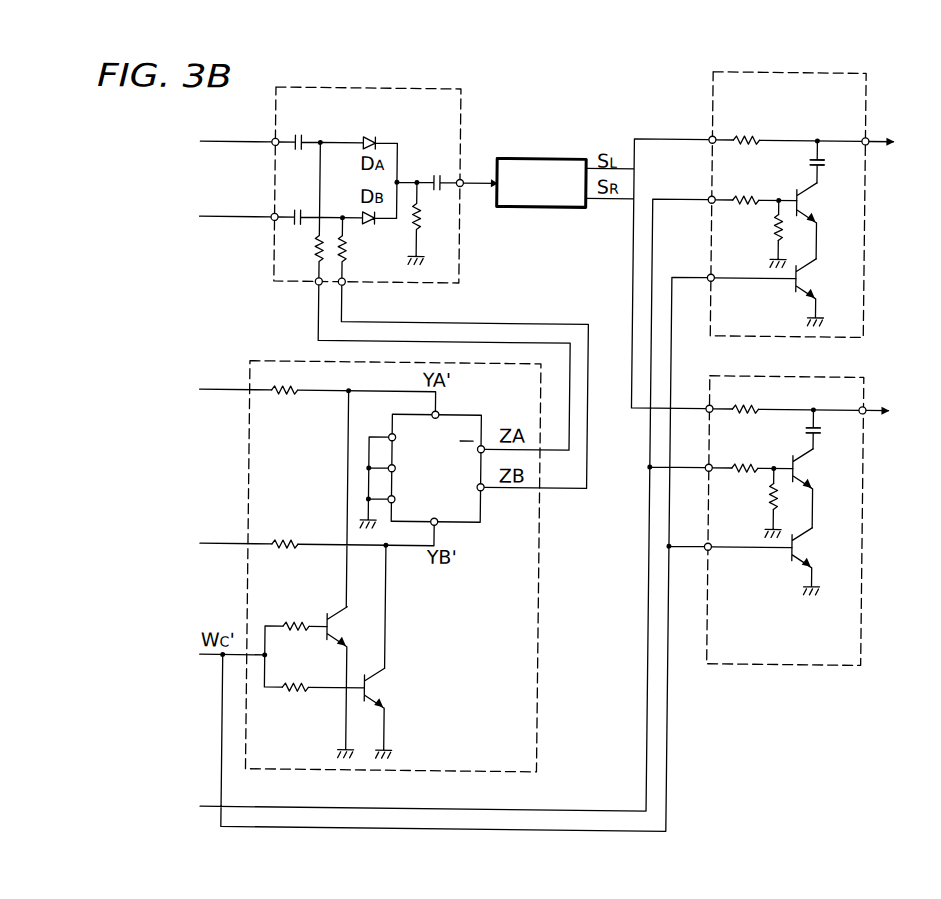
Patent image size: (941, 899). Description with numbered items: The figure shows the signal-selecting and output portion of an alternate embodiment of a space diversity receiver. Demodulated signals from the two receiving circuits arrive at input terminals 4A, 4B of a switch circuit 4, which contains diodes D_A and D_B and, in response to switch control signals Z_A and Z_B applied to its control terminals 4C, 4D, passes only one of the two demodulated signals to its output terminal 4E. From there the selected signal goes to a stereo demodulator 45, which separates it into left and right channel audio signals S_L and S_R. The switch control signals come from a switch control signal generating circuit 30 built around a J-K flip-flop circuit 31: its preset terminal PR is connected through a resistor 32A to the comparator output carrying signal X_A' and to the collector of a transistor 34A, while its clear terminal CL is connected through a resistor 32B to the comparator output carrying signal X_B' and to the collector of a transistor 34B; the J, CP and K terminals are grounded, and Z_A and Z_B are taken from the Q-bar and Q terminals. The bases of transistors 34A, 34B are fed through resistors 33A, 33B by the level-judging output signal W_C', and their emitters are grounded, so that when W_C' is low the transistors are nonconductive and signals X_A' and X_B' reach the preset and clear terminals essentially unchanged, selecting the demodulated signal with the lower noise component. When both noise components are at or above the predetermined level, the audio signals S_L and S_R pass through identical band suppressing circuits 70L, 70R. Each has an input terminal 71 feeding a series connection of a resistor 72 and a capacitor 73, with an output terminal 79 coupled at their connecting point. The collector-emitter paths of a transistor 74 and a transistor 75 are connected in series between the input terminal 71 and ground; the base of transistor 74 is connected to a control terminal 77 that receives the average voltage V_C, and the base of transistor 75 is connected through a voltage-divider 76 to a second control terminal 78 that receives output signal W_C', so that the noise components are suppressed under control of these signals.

The switch circuit 4 is at (418, 92).
The input terminal 4A is at (270, 148).
The input terminal 4B is at (270, 224).
The control terminal 4C is at (315, 288).
The control terminal 4D is at (342, 288).
The output terminal 4E is at (458, 180).
The stereo demodulator 45 is at (549, 144).
The band suppressing circuit 70L is at (863, 74).
The band suppressing circuit 70R is at (800, 375).
The input terminal 71 is at (707, 136).
The resistor 72 is at (746, 142).
The capacitor 73 is at (807, 160).
The transistor 74 is at (804, 201).
The transistor 75 is at (804, 280).
The voltage-divider 76 is at (755, 243).
The control terminal 77 is at (706, 196).
The second control terminal 78 is at (706, 274).
The output terminal 79 is at (865, 142).
The switch control signal generating circuit 30 is at (288, 364).
The J-K flip-flop circuit 31 is at (455, 416).
The resistor 32A is at (284, 396).
The resistor 32B is at (286, 545).
The resistor 33A is at (298, 627).
The resistor 33B is at (298, 688).
The transistor 34A is at (332, 628).
The transistor 34B is at (372, 690).